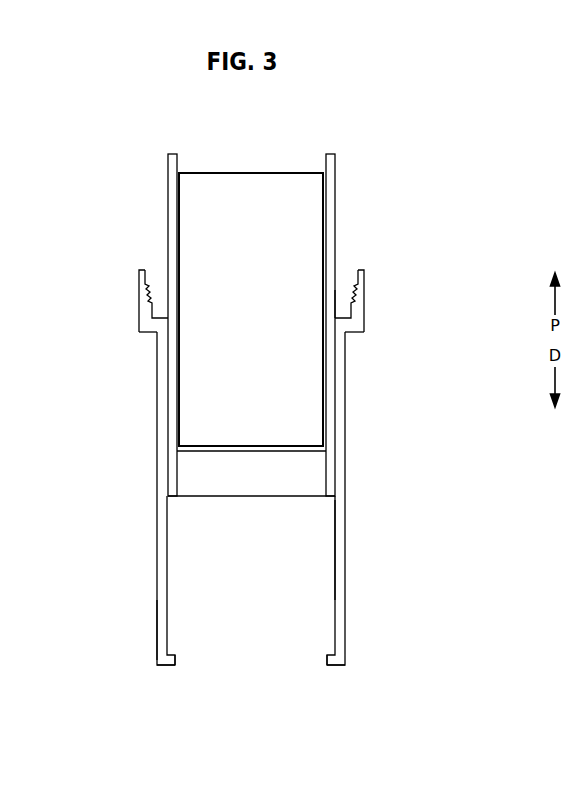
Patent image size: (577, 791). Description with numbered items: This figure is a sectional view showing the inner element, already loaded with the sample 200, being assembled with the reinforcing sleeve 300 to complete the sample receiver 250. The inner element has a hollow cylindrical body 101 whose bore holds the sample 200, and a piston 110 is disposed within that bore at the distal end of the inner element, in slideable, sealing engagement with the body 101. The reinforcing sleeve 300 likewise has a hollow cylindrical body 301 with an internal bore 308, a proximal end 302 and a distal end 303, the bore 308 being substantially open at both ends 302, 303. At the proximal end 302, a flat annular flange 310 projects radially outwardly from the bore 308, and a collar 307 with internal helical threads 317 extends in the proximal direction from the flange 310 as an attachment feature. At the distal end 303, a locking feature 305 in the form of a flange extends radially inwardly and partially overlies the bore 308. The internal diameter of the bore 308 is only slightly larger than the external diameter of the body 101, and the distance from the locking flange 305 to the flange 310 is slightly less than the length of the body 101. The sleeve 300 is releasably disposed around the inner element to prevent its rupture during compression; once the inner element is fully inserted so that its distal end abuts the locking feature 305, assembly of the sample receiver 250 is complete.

The hollow cylindrical body 101 is at (172, 183).
The sample 200 is at (236, 277).
The piston 110 is at (297, 480).
The internal helical threads 317 is at (139, 276).
The collar 307 is at (124, 315).
The proximal end 302 is at (147, 353).
The flat annular flange 310 is at (342, 290).
The hollow cylindrical body 301 is at (167, 548).
The reinforcing sleeve 300 is at (361, 604).
The internal bore 308 is at (315, 538).
The distal end 303 is at (133, 648).
The locking feature 305 is at (159, 663).
The sample receiver 250 is at (199, 688).